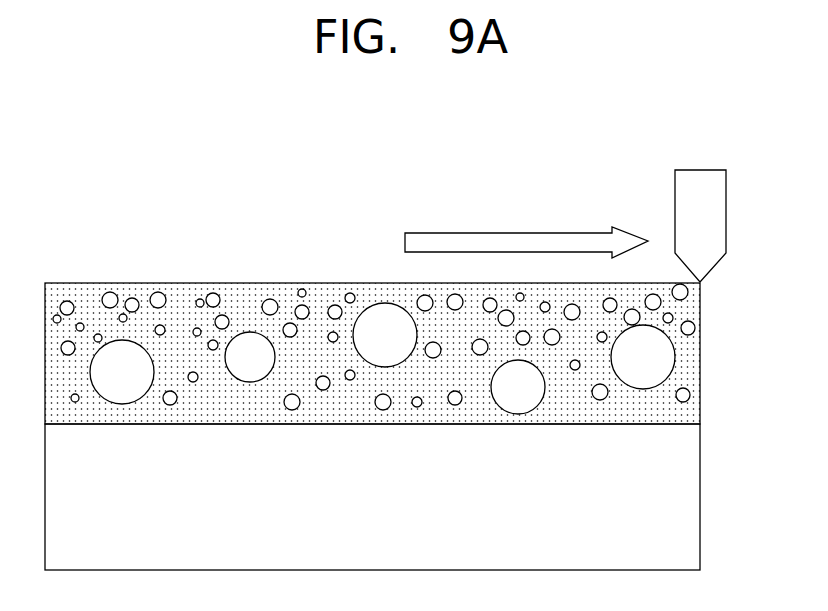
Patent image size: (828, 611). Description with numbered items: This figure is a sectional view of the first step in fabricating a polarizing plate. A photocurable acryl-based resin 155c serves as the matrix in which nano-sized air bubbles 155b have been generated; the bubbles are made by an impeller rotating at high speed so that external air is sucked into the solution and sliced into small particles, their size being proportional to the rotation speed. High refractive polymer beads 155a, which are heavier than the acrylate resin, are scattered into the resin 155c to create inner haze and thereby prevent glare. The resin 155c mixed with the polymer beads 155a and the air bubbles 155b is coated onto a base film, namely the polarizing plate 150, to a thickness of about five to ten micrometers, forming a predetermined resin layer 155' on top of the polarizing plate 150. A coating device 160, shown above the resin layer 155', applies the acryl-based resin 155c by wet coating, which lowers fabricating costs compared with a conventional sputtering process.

The polarizing plate 150 is at (706, 424).
The resin layer 155' is at (400, 325).
The high refractive polymer beads 155a is at (117, 342).
The nano-sized air bubbles 155b is at (214, 296).
The acryl-based resin 155c is at (320, 347).
The coating device 160 is at (722, 209).